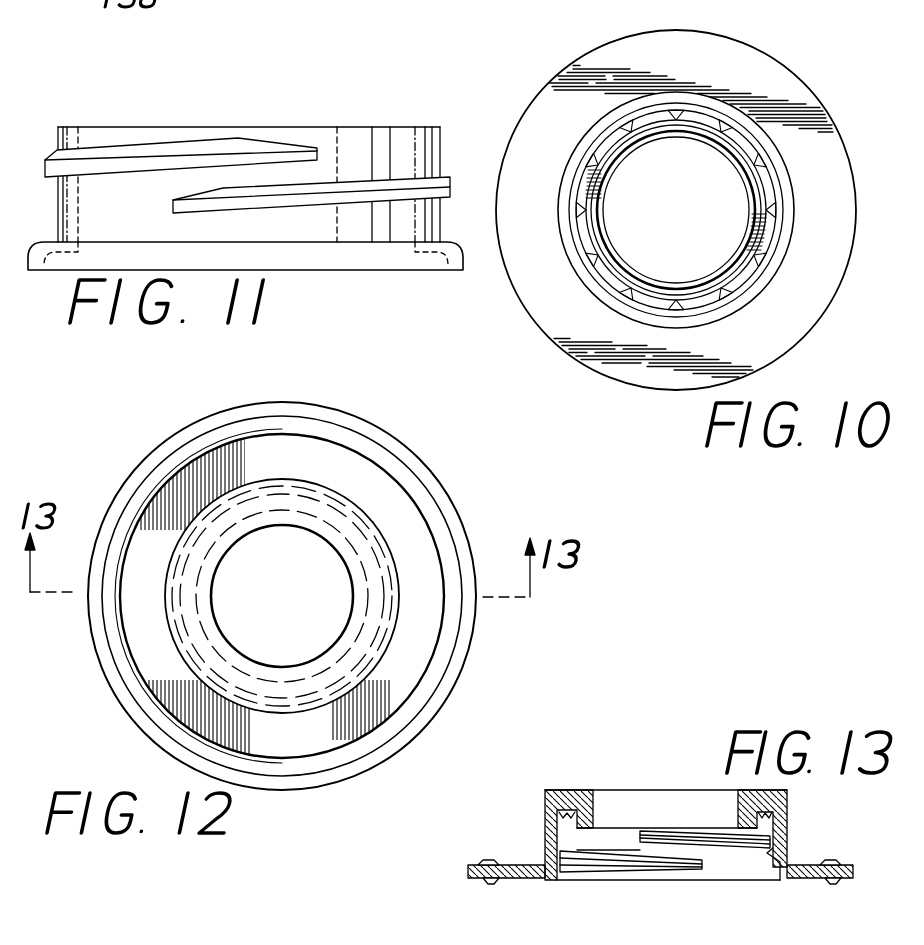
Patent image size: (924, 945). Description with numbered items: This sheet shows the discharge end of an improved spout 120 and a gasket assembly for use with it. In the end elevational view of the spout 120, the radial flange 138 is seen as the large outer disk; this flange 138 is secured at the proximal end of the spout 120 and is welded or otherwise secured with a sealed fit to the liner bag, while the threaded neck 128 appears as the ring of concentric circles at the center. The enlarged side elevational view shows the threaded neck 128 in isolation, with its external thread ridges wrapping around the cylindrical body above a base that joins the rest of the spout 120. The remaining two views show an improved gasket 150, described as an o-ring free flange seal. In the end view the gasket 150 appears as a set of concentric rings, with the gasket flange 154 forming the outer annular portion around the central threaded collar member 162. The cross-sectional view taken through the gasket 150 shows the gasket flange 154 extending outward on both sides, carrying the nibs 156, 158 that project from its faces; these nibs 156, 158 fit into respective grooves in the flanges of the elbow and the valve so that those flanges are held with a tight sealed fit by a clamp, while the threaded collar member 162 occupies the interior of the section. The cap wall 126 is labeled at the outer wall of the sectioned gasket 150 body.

In FIG. 10, the spout 120 is at (676, 232).
In FIG. 10, the radial flange 138 is at (707, 176).
In FIG. 11, the threaded neck 128 is at (245, 171).
In FIG. 12, the gasket 150 is at (279, 582).
In FIG. 13, the gasket 150 is at (660, 786).
In FIG. 12, the gasket flange 154 is at (282, 569).
In FIG. 13, the gasket flange 154 is at (721, 875).
In FIG. 13, the cap wall 126 is at (833, 803).
In FIG. 13, the nib 158 is at (662, 846).
In FIG. 13, the nib 156 is at (638, 911).
In FIG. 13, the threaded collar member 162 is at (631, 895).